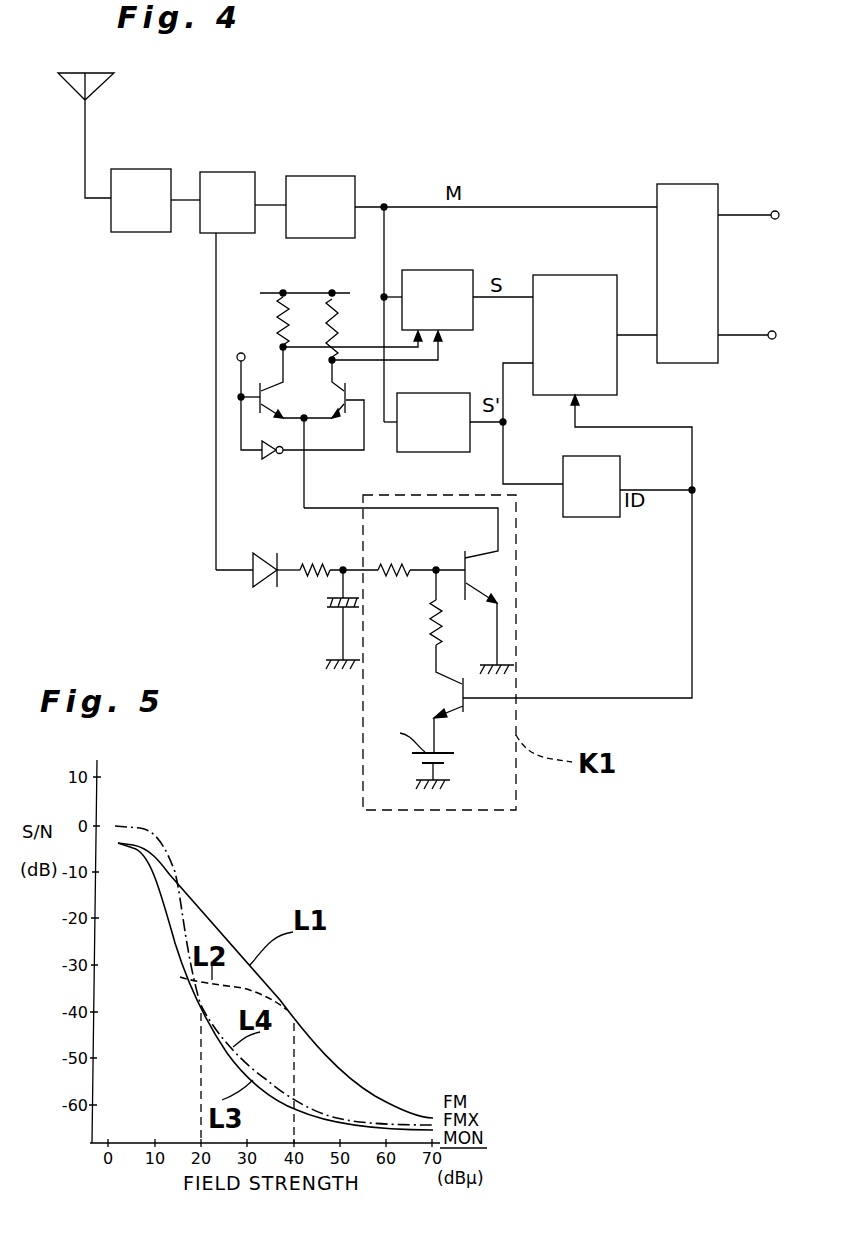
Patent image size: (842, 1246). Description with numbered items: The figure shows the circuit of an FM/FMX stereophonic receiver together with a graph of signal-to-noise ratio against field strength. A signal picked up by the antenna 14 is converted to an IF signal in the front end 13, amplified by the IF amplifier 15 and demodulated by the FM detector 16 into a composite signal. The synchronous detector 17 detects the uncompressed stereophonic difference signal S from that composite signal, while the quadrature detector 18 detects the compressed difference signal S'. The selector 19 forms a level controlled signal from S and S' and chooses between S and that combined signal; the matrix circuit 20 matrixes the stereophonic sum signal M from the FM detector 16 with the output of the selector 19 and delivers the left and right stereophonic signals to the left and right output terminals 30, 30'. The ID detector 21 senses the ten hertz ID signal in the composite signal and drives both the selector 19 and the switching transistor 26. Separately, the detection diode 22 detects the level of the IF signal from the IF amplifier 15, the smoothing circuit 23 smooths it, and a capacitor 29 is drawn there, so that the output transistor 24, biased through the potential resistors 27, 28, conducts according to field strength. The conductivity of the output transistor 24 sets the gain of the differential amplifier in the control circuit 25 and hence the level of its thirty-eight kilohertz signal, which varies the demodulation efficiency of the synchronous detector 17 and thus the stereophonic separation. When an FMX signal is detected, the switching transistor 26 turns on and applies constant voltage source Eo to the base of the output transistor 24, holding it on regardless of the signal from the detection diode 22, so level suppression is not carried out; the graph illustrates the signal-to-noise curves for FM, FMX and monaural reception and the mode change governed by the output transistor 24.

The front end 13 is at (140, 169).
The antenna 14 is at (70, 88).
The IF amplifier 15 is at (222, 172).
The FM detector 16 is at (308, 176).
The synchronous detector 17 is at (426, 270).
The quadrature detector 18 is at (428, 393).
The selector 19 is at (560, 275).
The matrix circuit 20 is at (688, 184).
The ID detector 21 is at (592, 517).
The detection diode 22 is at (266, 553).
The smoothing circuit 23 is at (331, 559).
The output transistor 24 is at (480, 573).
The control circuit 25 is at (321, 280).
The switching transistor 26 is at (442, 680).
The potential resistor 27 is at (393, 566).
The potential resistor 28 is at (428, 618).
The capacitor 29 is at (330, 610).
The left output terminal 30 is at (748, 162).
The right output terminal 30' is at (747, 381).